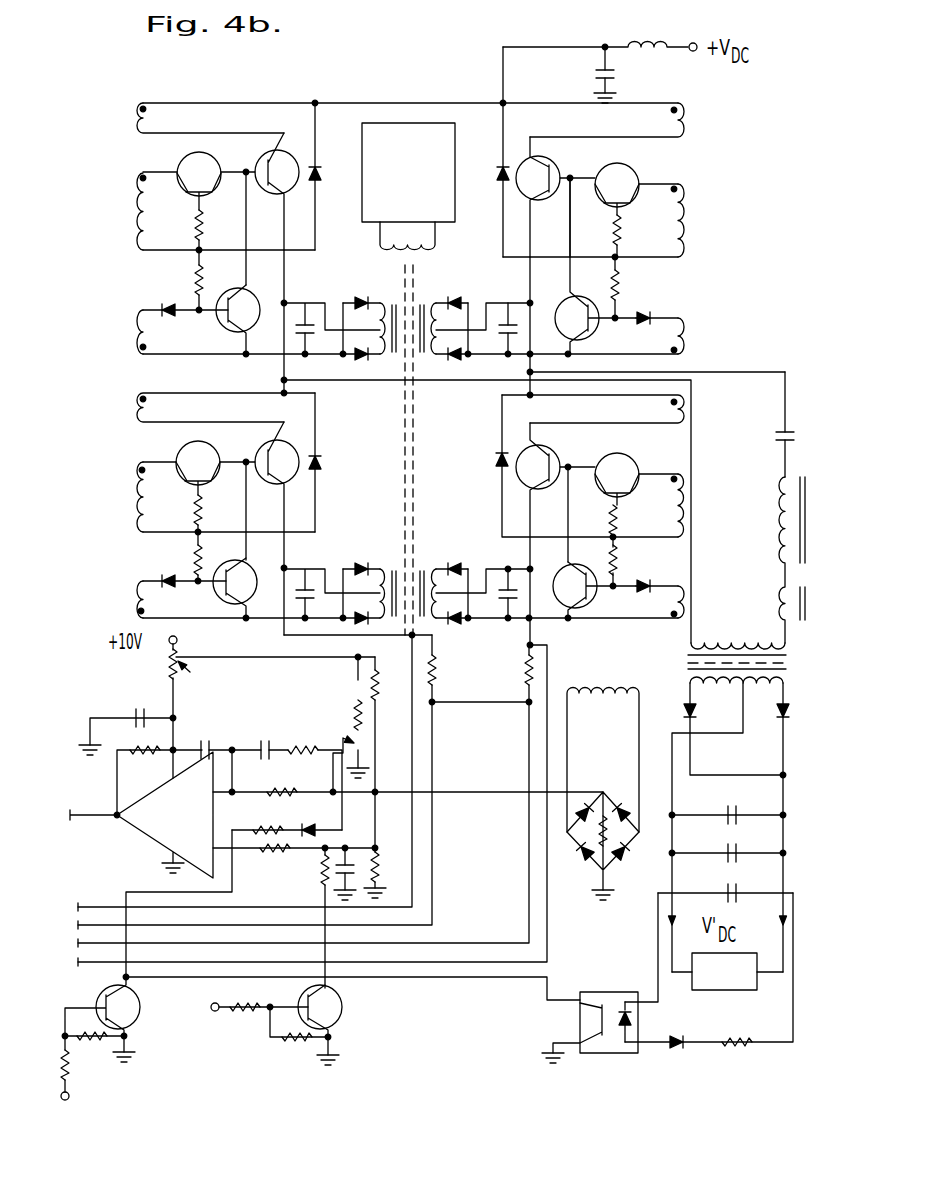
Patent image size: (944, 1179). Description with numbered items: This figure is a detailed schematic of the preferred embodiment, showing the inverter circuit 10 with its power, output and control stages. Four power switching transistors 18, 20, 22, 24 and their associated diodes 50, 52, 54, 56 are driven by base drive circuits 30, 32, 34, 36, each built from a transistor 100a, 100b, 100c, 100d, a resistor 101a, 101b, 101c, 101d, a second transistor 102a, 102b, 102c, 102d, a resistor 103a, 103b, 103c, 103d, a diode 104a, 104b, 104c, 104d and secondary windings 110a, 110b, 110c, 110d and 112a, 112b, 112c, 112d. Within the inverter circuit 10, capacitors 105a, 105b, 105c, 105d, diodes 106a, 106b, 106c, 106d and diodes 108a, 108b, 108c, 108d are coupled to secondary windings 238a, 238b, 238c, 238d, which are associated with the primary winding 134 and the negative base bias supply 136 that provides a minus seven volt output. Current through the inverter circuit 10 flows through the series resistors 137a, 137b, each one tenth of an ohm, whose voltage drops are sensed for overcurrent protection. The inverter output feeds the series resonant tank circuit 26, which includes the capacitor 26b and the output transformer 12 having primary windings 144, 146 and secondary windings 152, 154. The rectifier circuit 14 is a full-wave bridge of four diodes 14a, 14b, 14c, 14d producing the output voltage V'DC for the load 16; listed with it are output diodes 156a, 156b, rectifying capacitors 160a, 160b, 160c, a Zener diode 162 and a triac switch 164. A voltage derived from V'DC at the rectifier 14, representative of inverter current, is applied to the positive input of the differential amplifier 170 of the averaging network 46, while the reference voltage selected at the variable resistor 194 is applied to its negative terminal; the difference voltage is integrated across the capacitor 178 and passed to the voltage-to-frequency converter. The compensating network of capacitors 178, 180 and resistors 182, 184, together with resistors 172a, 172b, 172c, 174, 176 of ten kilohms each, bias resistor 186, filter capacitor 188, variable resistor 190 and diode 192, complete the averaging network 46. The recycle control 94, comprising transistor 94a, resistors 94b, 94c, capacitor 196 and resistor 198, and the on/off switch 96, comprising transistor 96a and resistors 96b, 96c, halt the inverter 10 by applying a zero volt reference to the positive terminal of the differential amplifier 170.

The inverter circuit 10 is at (484, 213).
The output transformer 12 is at (725, 649).
The rectifier circuit 14 is at (603, 859).
The bridge diode 14a is at (579, 793).
The bridge diode 14b is at (617, 793).
The bridge diode 14c is at (631, 864).
The bridge diode 14d is at (577, 864).
The load 16 is at (752, 990).
The power switching transistor 18 is at (284, 150).
The power switching transistor 20 is at (283, 440).
The power switching transistor 22 is at (530, 160).
The power switching transistor 24 is at (532, 450).
The series resonant tank circuit 26 is at (781, 507).
The capacitor 26b is at (793, 432).
The base drive circuit 30 is at (118, 182).
The base drive circuit 32 is at (116, 473).
The base drive circuit 34 is at (698, 218).
The base drive circuit 36 is at (724, 470).
The averaging network 46 is at (432, 878).
The diode 50 is at (316, 166).
The diode 52 is at (317, 455).
The diode 54 is at (500, 167).
The diode 56 is at (496, 458).
The recycle control 94 is at (280, 1035).
The transistor 94a is at (343, 1007).
The resistor 94b is at (259, 1026).
The resistor 94c is at (299, 1045).
The on/off switch 96 is at (121, 1055).
The transistor 96a is at (116, 1042).
The resistor 96b is at (70, 1072).
The resistor 96c is at (100, 1008).
The transistor 100a is at (186, 170).
The transistor 100b is at (183, 458).
The transistor 100c is at (626, 171).
The transistor 100d is at (626, 459).
The resistor 101a is at (203, 232).
The resistor 101b is at (191, 508).
The resistor 101c is at (633, 236).
The resistor 101d is at (631, 520).
The transistor 102a is at (230, 290).
The transistor 102b is at (236, 605).
The transistor 102c is at (595, 266).
The transistor 102d is at (594, 590).
The resistor 103a is at (192, 280).
The resistor 103b is at (190, 558).
The resistor 103c is at (634, 287).
The resistor 103d is at (633, 561).
The diode 104a is at (170, 318).
The diode 104b is at (168, 590).
The diode 104c is at (660, 316).
The diode 104d is at (639, 601).
The capacitor 105a is at (306, 318).
The capacitor 105b is at (290, 632).
The capacitor 105c is at (508, 320).
The capacitor 105d is at (516, 605).
The diode 106a is at (360, 297).
The diode 106b is at (360, 567).
The diode 106c is at (447, 298).
The diode 106d is at (449, 567).
The diode 108a is at (364, 362).
The diode 108b is at (358, 626).
The diode 108c is at (458, 362).
The diode 108d is at (458, 626).
The secondary winding 110a is at (136, 216).
The secondary winding 110b is at (136, 508).
The secondary winding 110c is at (684, 190).
The secondary winding 110d is at (677, 505).
The secondary winding 112a is at (135, 326).
The secondary winding 112b is at (135, 596).
The secondary winding 112c is at (683, 346).
The secondary winding 112d is at (682, 600).
The primary winding 134 is at (434, 250).
The negative base bias supply 136 is at (422, 181).
The resistor 137a is at (436, 680).
The resistor 137b is at (526, 692).
The primary winding 144 is at (734, 640).
The primary winding 146 is at (796, 590).
The secondary winding 152 is at (589, 692).
The secondary winding 154 is at (751, 655).
The output diode 156a is at (790, 712).
The output diode 156b is at (684, 712).
The rectifying capacitor 160a is at (724, 814).
The rectifying capacitor 160b is at (724, 852).
The rectifying capacitor 160c is at (724, 892).
The Zener diode 162 is at (688, 1047).
The triac switch 164 is at (592, 1003).
The differential amplifier 170 is at (197, 829).
The resistor 172a is at (280, 788).
The resistor 172b is at (252, 824).
The resistor 172c is at (276, 856).
The resistor 174 is at (352, 698).
The resistor 176 is at (384, 741).
The capacitor 178 is at (204, 741).
The capacitor 180 is at (260, 741).
The resistor 182 is at (322, 728).
The resistor 184 is at (159, 780).
The bias resistor 186 is at (272, 673).
The filter capacitor 188 is at (134, 710).
The variable resistor 190 is at (364, 746).
The diode 192 is at (307, 824).
The variable resistor 194 is at (372, 842).
The capacitor 196 is at (352, 876).
The resistor 198 is at (320, 882).
The secondary winding 238a is at (390, 360).
The secondary winding 238b is at (390, 566).
The secondary winding 238c is at (434, 360).
The secondary winding 238d is at (433, 566).